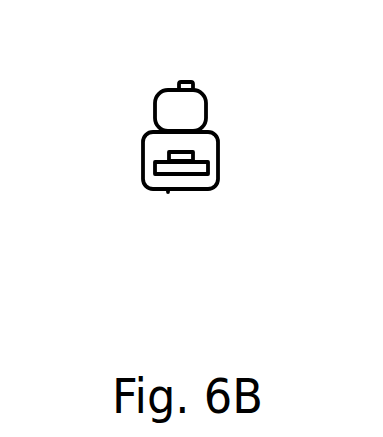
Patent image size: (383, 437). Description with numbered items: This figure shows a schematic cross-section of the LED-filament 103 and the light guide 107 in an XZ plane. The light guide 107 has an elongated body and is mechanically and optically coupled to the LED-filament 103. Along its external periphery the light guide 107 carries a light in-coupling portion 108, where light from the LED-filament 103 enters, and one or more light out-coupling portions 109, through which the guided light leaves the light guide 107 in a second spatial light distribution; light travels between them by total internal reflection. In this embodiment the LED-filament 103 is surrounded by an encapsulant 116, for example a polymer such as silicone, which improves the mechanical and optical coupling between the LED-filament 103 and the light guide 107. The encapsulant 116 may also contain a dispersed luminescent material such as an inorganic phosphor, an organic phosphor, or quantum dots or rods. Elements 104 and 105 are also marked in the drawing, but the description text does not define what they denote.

The LED-filament 103 is at (191, 167).
The arm portion 104 is at (203, 170).
The torso pocket 105 is at (156, 163).
The light guide 107 is at (232, 73).
The light in-coupling portion 108 is at (166, 136).
The light out-coupling portion 109 is at (177, 86).
The encapsulant 116 is at (168, 190).